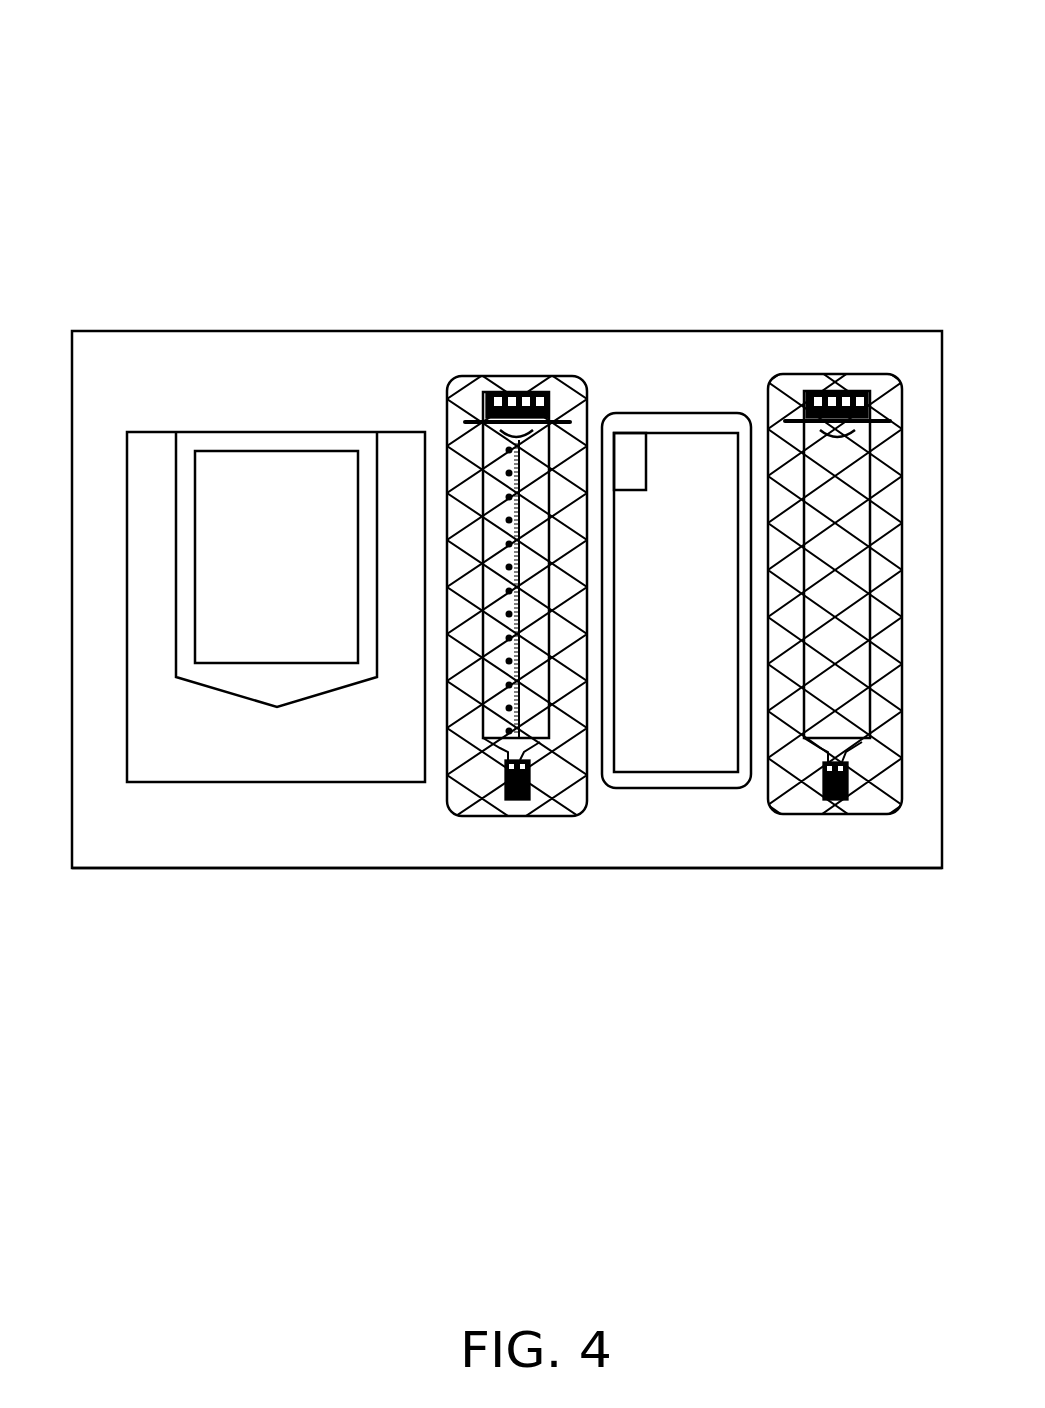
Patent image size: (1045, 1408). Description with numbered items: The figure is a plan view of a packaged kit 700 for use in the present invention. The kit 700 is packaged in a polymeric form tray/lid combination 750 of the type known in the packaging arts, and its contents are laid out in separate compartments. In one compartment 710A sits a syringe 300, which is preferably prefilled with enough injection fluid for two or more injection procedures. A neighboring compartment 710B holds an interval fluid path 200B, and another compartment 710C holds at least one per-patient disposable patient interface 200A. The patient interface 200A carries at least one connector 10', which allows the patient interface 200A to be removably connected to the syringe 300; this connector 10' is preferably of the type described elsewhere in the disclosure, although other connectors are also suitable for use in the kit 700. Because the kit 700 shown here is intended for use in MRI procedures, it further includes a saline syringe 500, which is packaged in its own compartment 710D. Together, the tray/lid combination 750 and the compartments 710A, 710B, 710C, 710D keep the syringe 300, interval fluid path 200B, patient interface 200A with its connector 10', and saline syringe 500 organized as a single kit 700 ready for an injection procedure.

The packaged kit 700 is at (361, 180).
The compartment 710A is at (513, 570).
The compartment 710B is at (276, 488).
The compartment 710C is at (654, 493).
The compartment 710D is at (852, 561).
The connector 10' is at (601, 356).
The per-patient disposable patient interface 200A is at (638, 589).
The interval fluid path 200B is at (312, 574).
The syringe 300 is at (540, 742).
The saline syringe 500 is at (870, 740).
The polymeric form tray/lid combination 750 is at (688, 842).